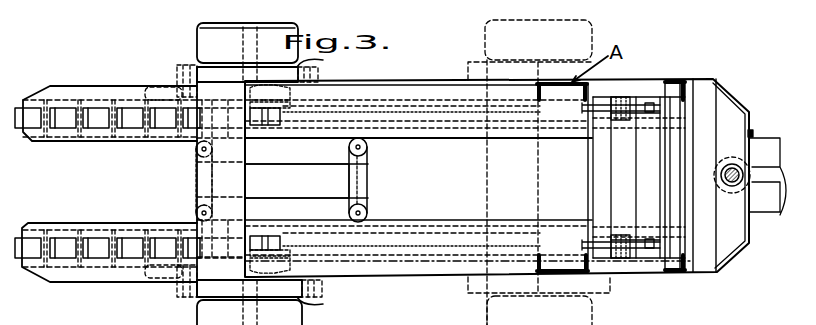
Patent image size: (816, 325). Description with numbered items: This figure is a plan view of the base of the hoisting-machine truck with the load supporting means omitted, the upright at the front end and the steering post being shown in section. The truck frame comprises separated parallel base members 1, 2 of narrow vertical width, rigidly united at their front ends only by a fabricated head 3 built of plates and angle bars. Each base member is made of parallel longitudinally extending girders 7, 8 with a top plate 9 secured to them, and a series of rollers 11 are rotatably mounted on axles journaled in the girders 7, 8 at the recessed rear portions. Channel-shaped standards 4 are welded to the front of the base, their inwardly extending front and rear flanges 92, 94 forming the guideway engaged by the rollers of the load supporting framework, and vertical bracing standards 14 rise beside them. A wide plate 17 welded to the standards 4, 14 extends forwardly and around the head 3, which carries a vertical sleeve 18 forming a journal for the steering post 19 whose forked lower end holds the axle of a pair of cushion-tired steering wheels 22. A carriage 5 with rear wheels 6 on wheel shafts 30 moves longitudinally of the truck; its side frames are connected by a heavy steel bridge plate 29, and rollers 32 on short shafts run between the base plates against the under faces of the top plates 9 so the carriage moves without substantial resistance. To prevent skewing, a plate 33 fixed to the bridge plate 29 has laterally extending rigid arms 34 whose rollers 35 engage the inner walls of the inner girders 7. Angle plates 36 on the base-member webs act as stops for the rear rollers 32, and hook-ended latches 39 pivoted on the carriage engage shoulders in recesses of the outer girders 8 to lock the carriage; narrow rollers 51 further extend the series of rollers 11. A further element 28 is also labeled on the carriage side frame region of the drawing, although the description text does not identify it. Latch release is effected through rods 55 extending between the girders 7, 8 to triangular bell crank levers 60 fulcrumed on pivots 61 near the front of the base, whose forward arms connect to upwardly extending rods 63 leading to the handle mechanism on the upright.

The base member 1 is at (427, 278).
The base member 2 is at (392, 84).
The head 3 is at (707, 238).
The standard 4 is at (563, 273).
The carriage 5 is at (203, 167).
The rear wheel 6 is at (298, 40).
The girder 7 is at (118, 133).
The girder 8 is at (110, 100).
The top plate 9 is at (81, 88).
The roller 11 is at (90, 126).
The bracing standard 14 is at (678, 80).
The plate 17 is at (622, 275).
The sleeve 18 is at (735, 165).
The steering post 19 is at (735, 186).
The steering wheel 22 is at (765, 203).
The clamp 28 is at (323, 61).
The bridge plate 29 is at (241, 153).
The wheel shaft 30 is at (247, 40).
The roller 32 is at (183, 87).
The plate 33 is at (318, 182).
The arm 34 is at (205, 178).
The roller 35 is at (194, 147).
The angle plate 36 is at (177, 88).
The latch 39 is at (265, 88).
The roller 51 is at (280, 130).
The rod 55 is at (470, 113).
The bell crank lever 60 is at (638, 110).
The pivot 61 is at (620, 97).
The rod 63 is at (648, 103).
The front flange 92 is at (580, 253).
The rear flange 94 is at (545, 257).